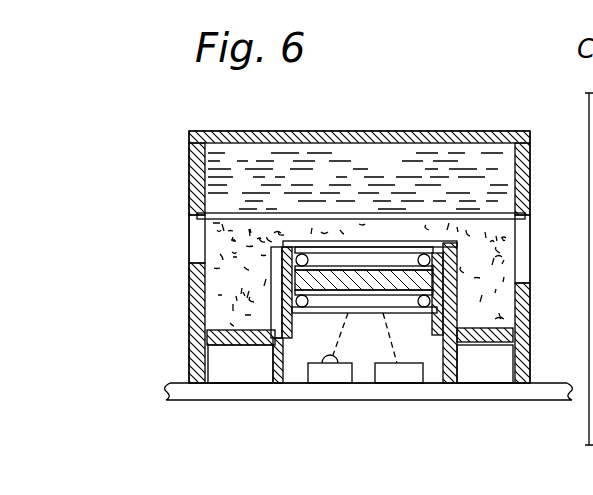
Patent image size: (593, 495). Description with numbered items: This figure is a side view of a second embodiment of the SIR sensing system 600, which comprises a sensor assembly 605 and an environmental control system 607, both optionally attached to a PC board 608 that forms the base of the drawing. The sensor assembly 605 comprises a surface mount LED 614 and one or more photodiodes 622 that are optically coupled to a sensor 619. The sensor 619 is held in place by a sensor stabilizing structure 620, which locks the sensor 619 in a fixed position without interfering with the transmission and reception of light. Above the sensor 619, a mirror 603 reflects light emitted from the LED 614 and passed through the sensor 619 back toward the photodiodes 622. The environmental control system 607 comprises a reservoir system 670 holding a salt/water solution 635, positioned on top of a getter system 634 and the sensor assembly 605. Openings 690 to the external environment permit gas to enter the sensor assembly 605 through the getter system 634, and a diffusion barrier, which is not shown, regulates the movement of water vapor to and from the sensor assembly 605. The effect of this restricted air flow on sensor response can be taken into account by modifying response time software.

The SIR sensing system 600 is at (178, 192).
The mirror 603 is at (408, 247).
The sensor assembly 605 is at (535, 240).
The environmental control system 607 is at (113, 140).
The PC board 608 is at (418, 401).
The surface mount LED 614 is at (317, 377).
The sensor 619 is at (354, 268).
The sensor stabilizing structure 620 is at (458, 345).
The photodiode 622 is at (391, 374).
The getter system 634 is at (220, 313).
The salt/water solution 635 is at (468, 153).
The reservoir system 670 is at (255, 184).
The openings 690 is at (189, 277).